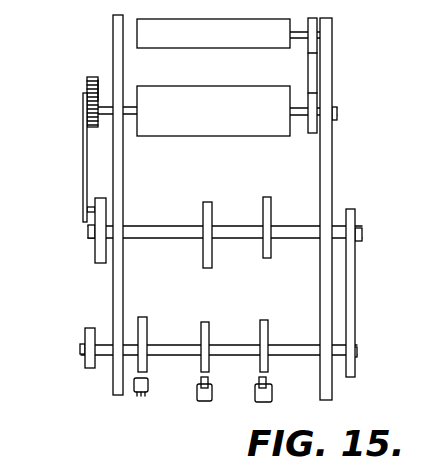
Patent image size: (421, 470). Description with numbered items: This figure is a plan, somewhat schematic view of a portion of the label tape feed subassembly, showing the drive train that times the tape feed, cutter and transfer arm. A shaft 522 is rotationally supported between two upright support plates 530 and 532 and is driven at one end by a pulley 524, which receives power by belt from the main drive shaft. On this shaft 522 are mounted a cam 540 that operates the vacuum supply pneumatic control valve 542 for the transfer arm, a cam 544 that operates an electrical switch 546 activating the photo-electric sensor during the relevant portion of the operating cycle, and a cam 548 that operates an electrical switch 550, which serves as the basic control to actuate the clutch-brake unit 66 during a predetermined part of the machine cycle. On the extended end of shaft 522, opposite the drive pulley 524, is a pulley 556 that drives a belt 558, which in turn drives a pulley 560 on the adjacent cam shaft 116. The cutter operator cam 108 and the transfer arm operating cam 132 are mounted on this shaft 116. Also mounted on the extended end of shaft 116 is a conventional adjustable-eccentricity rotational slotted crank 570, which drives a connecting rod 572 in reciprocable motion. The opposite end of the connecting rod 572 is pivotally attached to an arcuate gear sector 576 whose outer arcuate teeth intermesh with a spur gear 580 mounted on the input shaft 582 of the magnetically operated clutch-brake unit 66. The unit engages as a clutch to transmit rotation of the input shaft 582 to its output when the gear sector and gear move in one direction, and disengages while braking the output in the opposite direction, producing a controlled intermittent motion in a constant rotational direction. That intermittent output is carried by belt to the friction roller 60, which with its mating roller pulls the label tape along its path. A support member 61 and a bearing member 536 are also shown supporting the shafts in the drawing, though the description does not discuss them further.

The friction roller 60 is at (213, 33).
The magnetic clutch-brake unit 66 is at (213, 111).
The support plate 61 is at (312, 71).
The pulley 556 is at (305, 112).
The arcuate gear sector 576 is at (92, 77).
The spur gear 580 is at (98, 90).
The input shaft 582 is at (110, 112).
The connecting rod 572 is at (83, 172).
The slotted crank 570 is at (95, 262).
The upright support plate 530 is at (118, 396).
The cam shaft 116 is at (300, 232).
The rotational cam 132 is at (209, 205).
The cutter operator cam 108 is at (269, 203).
The belt 558 is at (356, 273).
The pulley 560 is at (352, 222).
The shaft 522 is at (167, 348).
The pulley 524 is at (88, 370).
The cam 540 is at (143, 317).
The pneumatic control valve 542 is at (148, 390).
The cam 544 is at (206, 327).
The electrical switch 546 is at (205, 401).
The cam 548 is at (268, 330).
The electrical switch 550 is at (255, 397).
The bearing 536 is at (357, 350).
The upright support plate 532 is at (332, 391).